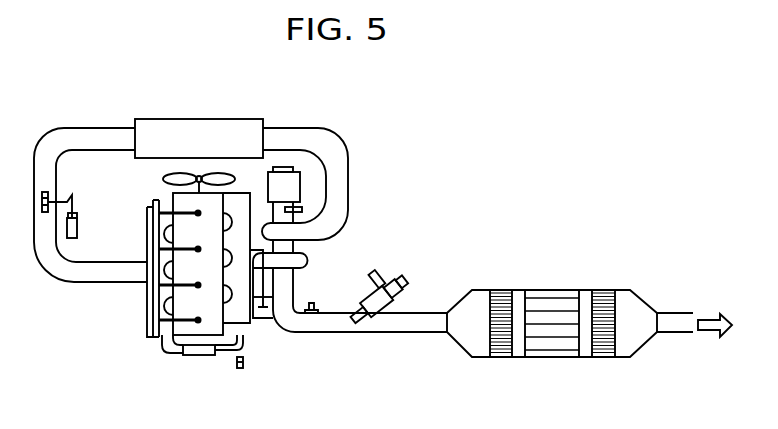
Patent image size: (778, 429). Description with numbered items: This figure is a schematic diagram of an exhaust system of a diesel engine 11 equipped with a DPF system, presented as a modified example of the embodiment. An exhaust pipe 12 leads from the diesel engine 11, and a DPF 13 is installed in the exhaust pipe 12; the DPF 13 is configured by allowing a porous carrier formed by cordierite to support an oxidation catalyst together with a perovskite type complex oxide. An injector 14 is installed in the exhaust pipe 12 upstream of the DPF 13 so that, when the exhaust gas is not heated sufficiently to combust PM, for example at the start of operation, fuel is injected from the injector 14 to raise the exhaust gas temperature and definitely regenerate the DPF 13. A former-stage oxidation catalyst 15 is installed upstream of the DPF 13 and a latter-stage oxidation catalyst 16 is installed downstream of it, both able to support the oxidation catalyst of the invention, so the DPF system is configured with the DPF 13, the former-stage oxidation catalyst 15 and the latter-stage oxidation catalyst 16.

The diesel engine 11 is at (364, 147).
The exhaust pipe 12 is at (415, 340).
The DPF 13 is at (553, 290).
The injector 14 is at (404, 280).
The former-stage oxidation catalyst 15 is at (501, 290).
The latter-stage oxidation catalyst 16 is at (605, 290).